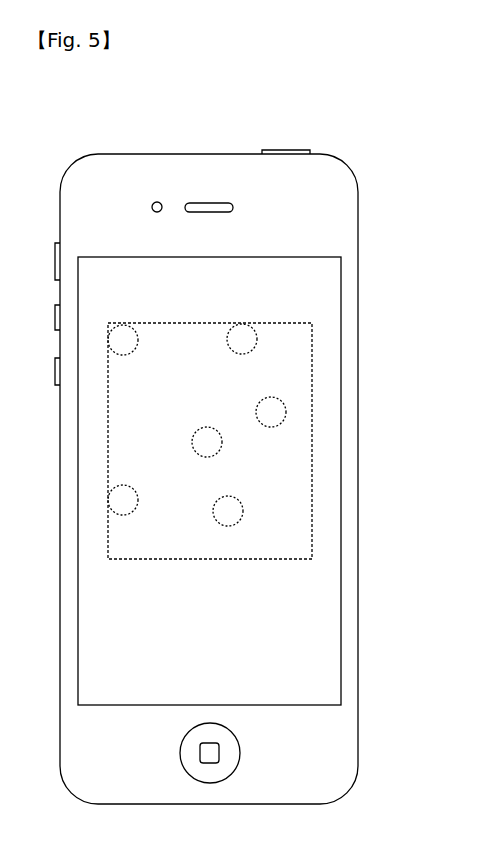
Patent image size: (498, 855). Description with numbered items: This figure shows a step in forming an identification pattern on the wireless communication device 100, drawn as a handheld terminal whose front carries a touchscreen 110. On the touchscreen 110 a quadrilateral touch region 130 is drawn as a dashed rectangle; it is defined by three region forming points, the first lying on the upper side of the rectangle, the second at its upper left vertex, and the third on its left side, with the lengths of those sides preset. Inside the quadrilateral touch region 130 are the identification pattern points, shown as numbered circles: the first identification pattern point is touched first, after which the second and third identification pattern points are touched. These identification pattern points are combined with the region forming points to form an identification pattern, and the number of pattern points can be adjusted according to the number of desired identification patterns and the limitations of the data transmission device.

The wireless communication device 100 is at (208, 154).
The touchscreen 110 is at (358, 478).
The quadrilateral touch region 130 is at (312, 416).